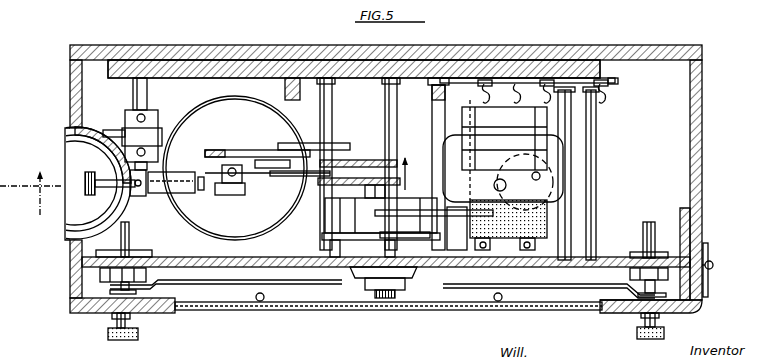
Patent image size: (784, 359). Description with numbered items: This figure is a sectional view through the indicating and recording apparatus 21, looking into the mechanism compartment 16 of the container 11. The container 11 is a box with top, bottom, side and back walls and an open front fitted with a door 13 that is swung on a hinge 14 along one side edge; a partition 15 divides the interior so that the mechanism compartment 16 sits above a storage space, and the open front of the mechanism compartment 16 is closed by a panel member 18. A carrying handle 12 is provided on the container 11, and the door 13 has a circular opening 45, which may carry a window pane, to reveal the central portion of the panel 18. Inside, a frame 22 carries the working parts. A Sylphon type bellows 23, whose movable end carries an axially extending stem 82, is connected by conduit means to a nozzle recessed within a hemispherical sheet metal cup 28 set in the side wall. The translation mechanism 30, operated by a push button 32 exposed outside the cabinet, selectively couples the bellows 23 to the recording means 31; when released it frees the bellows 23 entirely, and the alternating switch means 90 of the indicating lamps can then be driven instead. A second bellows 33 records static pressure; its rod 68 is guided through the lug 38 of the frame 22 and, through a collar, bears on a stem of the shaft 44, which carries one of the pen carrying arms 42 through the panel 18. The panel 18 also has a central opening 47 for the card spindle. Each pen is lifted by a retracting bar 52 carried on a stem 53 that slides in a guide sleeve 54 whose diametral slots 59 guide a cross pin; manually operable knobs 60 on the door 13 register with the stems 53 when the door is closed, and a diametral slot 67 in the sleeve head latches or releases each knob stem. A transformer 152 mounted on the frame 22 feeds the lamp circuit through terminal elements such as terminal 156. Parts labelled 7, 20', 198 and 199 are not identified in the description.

The container 11 is at (78, 105).
The frame 22 is at (256, 59).
The mechanism compartment 16 is at (695, 178).
The door 13 is at (72, 296).
The recording mechanism 31 is at (668, 287).
The partition 15 is at (652, 72).
The indicating and recording mechanism 21 is at (657, 118).
The hinge 14 is at (713, 266).
The hemispherical sheet metal cup 28 is at (70, 153).
The optical axis 7 is at (209, 187).
The bellows element 23 is at (203, 110).
The translation mechanism 30 is at (212, 208).
The push button 32 is at (88, 198).
The stem 82 is at (233, 167).
The alternating switch means 90 is at (358, 158).
The carrying handle 12 is at (398, 147).
The motor housing 20' is at (535, 173).
The rod 68 is at (556, 174).
The flange portion 38 is at (548, 222).
The bellows element 33 is at (527, 202).
The transformer 152 is at (486, 83).
The spring hook 198 is at (505, 62).
The spring hook 199 is at (600, 62).
The terminal element 156 is at (612, 83).
The guide sleeve 54 is at (130, 238).
The stem 53 is at (115, 283).
The slots 59 is at (642, 238).
The retracting bar 52 is at (298, 290).
The shaft 44 is at (470, 293).
The central opening 47 is at (355, 272).
The panel member 18 is at (243, 270).
The pen carrying arms 42 is at (262, 301).
The opening 45 is at (185, 305).
The diametral slot 67 is at (116, 320).
The knobs 60 is at (114, 339).